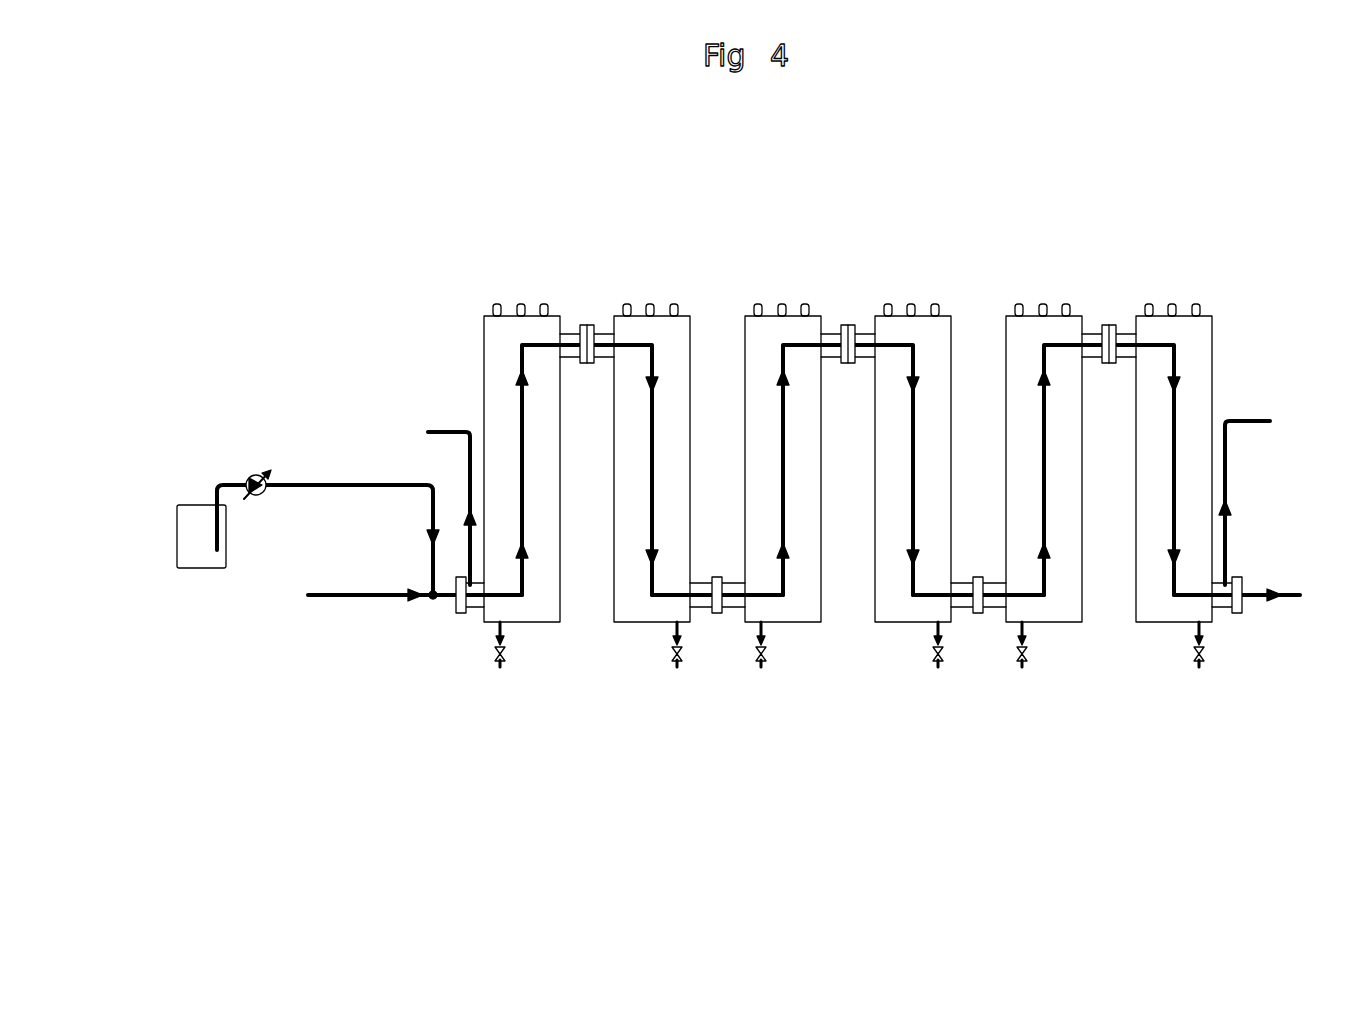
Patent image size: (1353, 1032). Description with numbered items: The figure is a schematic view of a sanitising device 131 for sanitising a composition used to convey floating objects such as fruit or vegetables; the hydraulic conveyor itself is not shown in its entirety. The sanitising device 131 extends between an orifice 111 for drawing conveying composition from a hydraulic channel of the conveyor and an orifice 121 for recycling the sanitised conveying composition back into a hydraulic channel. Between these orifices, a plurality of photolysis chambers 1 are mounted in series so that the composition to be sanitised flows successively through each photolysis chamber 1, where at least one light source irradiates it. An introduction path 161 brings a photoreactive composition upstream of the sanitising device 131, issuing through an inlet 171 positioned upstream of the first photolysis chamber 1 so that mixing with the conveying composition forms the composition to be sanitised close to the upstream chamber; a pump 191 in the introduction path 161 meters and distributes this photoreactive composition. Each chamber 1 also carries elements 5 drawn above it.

The photolysis chamber 1 is at (544, 612).
The outlet ports 5 is at (846, 280).
The sanitising device 131 is at (893, 237).
The pump 191 is at (250, 478).
The introduction path 161 is at (325, 483).
The orifice for drawing conveying composition 111 is at (308, 597).
The inlet for photoreactive composition 171 is at (433, 598).
The orifice for recycling sanitised conveying composition 121 is at (1300, 595).